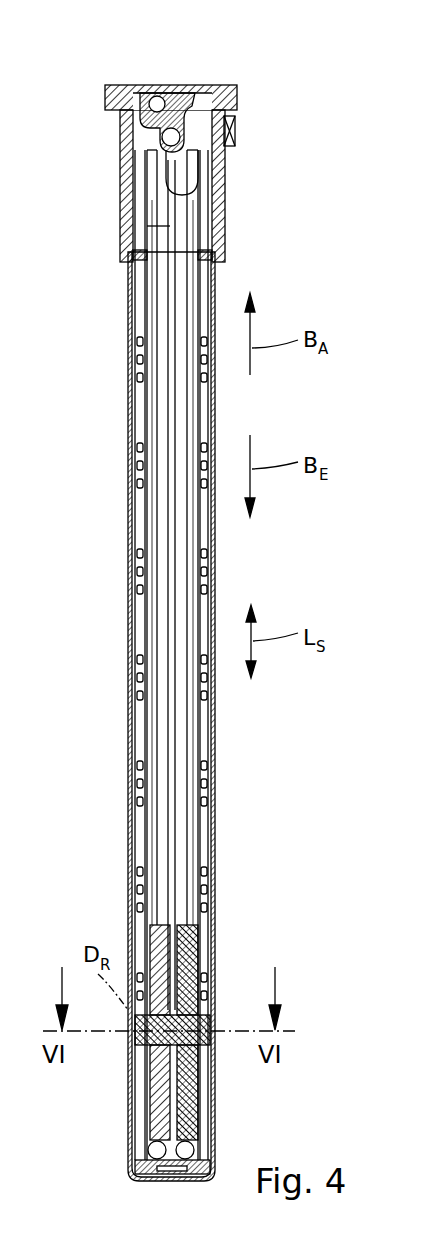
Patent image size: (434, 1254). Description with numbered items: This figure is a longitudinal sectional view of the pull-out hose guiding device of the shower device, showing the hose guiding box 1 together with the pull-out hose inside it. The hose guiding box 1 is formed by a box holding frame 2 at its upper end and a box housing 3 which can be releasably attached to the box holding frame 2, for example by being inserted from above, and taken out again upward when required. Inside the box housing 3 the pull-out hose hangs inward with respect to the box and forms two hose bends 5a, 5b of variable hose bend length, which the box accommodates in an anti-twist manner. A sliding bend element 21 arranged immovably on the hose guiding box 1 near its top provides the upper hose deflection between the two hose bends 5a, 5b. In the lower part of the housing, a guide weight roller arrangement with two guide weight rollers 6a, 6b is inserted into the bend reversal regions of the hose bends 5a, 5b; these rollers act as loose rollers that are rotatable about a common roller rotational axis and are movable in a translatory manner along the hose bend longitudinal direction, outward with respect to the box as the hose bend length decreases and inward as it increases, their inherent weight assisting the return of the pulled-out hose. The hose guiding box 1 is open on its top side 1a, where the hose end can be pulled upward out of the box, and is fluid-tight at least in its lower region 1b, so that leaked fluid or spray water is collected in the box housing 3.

The hose guiding box 1 is at (215, 280).
The top side 1a is at (191, 90).
The lower region 1b is at (215, 943).
The box holding frame 2 is at (122, 200).
The box housing 3 is at (216, 553).
The hose bend 5a is at (155, 735).
The hose bend 5b is at (193, 743).
The guide weight roller 6a is at (148, 1095).
The guide weight roller 6b is at (207, 1097).
The sliding bend element 21 is at (183, 130).